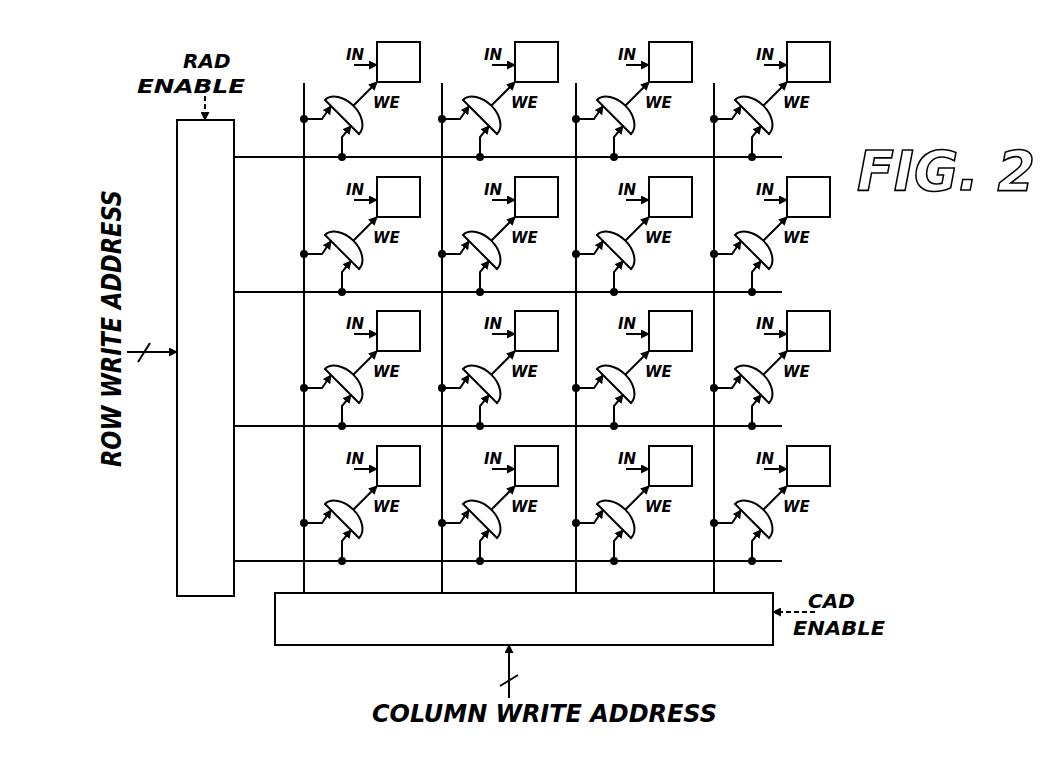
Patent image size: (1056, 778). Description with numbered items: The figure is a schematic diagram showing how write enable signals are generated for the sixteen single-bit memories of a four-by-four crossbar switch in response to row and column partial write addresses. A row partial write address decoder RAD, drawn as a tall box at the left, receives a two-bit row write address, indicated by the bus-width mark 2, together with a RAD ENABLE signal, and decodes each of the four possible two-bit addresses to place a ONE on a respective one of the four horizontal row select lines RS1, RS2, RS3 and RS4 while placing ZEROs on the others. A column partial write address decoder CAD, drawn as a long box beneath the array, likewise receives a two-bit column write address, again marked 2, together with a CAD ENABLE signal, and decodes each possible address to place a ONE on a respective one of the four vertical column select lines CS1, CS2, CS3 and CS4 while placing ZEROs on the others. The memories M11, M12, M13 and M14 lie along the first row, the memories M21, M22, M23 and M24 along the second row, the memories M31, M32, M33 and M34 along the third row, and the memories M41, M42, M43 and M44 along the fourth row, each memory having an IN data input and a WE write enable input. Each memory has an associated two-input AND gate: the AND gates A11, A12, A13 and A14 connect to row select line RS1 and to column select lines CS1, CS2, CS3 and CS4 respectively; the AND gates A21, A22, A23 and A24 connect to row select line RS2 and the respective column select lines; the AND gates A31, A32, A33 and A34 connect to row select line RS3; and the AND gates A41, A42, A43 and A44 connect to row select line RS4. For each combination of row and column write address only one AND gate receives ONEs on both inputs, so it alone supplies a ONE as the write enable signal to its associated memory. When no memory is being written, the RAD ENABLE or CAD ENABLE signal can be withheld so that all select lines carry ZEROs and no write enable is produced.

The row partial write address decoder RAD is at (196, 596).
The column partial write address decoder CAD is at (275, 605).
The two-bit partial write address 2 is at (339, 520).
The row select line RS1 is at (286, 157).
The row select line RS2 is at (286, 292).
The row select line RS3 is at (286, 426).
The row select line RS4 is at (286, 561).
The column select line CS1 is at (307, 577).
The column select line CS2 is at (445, 577).
The column select line CS3 is at (579, 577).
The column select line CS4 is at (717, 577).
The single-bit memory M11 is at (399, 62).
The single-bit memory M12 is at (537, 62).
The single-bit memory M13 is at (671, 62).
The single-bit memory M14 is at (809, 62).
The single-bit memory M21 is at (399, 197).
The single-bit memory M22 is at (537, 197).
The single-bit memory M23 is at (671, 197).
The single-bit memory M24 is at (809, 197).
The single-bit memory M31 is at (399, 331).
The single-bit memory M32 is at (537, 331).
The single-bit memory M33 is at (671, 331).
The single-bit memory M34 is at (809, 331).
The single-bit memory M41 is at (399, 466).
The single-bit memory M42 is at (537, 466).
The single-bit memory M43 is at (671, 466).
The single-bit memory M44 is at (809, 466).
The AND gate A11 is at (356, 121).
The AND gate A12 is at (494, 121).
The AND gate A13 is at (628, 121).
The AND gate A14 is at (766, 121).
The AND gate A21 is at (356, 256).
The AND gate A22 is at (494, 256).
The AND gate A23 is at (628, 256).
The AND gate A24 is at (766, 256).
The AND gate A31 is at (356, 390).
The AND gate A32 is at (494, 390).
The AND gate A33 is at (628, 390).
The AND gate A34 is at (766, 390).
The AND gate A41 is at (356, 525).
The AND gate A42 is at (494, 525).
The AND gate A43 is at (628, 525).
The AND gate A44 is at (766, 525).